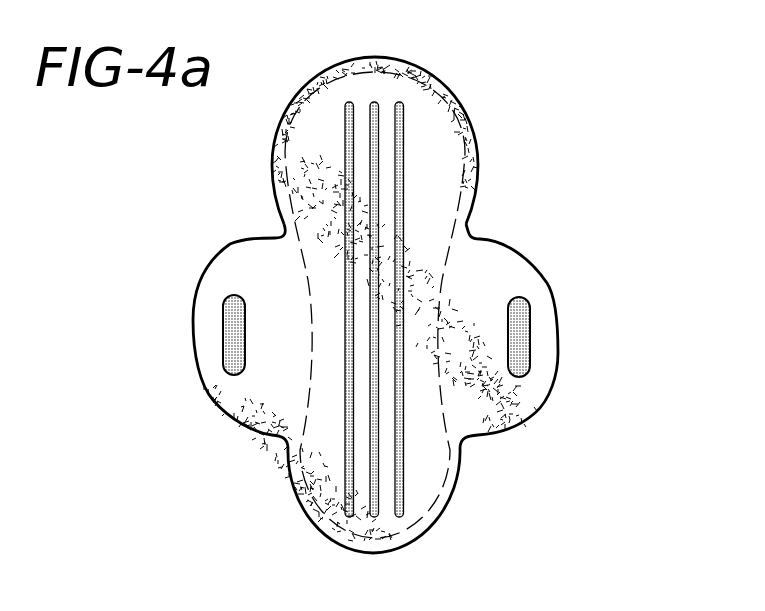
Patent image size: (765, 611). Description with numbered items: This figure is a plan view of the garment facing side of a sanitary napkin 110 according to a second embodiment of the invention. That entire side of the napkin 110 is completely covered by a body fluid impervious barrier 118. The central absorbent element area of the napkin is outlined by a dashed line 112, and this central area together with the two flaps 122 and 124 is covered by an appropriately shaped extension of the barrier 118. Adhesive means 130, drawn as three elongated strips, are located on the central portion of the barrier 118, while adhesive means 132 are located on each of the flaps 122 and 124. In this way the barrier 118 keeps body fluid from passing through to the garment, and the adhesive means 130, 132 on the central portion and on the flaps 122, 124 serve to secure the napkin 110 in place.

The sanitary napkin 110 is at (565, 132).
The dashed line 112 is at (446, 456).
The body fluid impervious barrier 118 is at (298, 151).
The flap 122 is at (216, 256).
The flap 124 is at (546, 283).
The adhesive means 130 is at (397, 101).
The adhesive means 132 is at (223, 332).